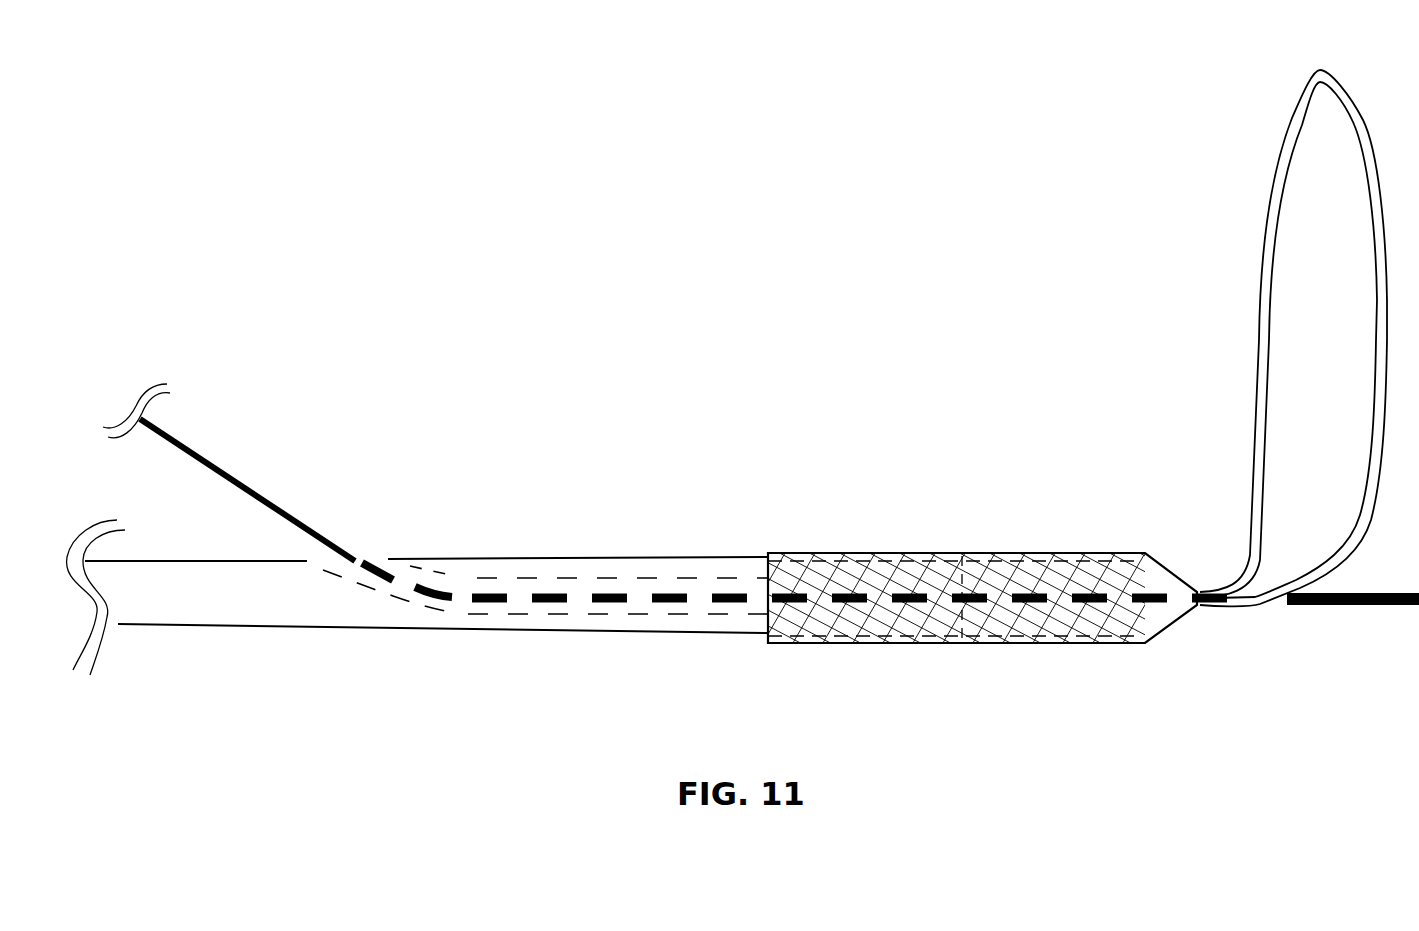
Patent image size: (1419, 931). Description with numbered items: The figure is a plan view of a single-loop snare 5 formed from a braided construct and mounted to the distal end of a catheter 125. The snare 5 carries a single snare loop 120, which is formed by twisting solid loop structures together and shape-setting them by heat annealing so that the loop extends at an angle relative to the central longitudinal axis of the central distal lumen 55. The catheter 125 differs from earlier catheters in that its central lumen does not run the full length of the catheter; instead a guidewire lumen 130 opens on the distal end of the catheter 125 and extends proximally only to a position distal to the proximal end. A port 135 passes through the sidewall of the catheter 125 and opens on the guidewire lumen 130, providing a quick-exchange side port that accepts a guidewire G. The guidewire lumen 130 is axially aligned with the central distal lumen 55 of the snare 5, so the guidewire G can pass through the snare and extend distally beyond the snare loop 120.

The snare 5 is at (884, 197).
The central distal lumen 55 is at (1016, 620).
The single snare loop 120 is at (1257, 330).
The catheter 125 is at (543, 556).
The guidewire lumen 130 is at (638, 606).
The port 135 is at (378, 556).
The guidewire G is at (1370, 608).